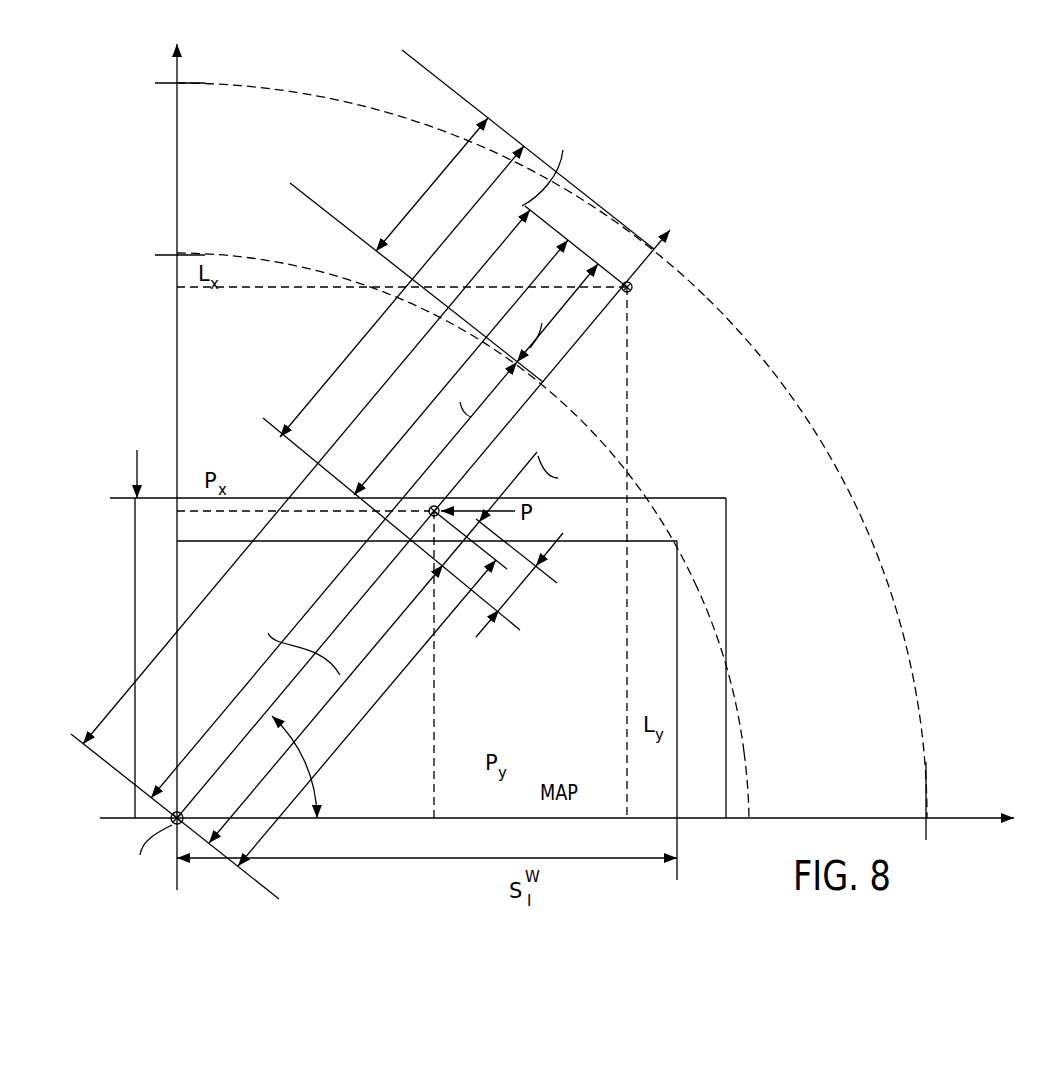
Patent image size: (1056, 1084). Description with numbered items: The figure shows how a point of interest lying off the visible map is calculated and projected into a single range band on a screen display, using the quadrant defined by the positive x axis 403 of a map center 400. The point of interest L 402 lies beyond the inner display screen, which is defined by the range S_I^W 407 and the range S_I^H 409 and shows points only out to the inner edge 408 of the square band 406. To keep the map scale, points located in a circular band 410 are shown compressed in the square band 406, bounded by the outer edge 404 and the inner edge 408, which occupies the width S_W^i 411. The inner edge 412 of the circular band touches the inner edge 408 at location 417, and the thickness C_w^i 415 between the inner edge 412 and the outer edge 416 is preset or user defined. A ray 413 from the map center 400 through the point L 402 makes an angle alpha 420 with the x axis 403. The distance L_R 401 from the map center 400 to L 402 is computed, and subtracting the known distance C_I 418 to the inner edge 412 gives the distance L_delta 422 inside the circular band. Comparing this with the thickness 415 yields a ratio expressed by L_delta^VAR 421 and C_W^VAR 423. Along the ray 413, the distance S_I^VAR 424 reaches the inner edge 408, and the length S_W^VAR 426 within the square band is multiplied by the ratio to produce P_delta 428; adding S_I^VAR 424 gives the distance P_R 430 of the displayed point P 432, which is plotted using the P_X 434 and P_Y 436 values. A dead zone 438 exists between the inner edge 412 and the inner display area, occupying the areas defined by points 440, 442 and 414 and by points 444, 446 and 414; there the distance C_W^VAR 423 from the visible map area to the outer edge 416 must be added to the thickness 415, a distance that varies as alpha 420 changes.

The map center 400 is at (180, 812).
The distance L_R 401 is at (387, 384).
The point of interest L 402 is at (640, 289).
The positive x axis 403 is at (981, 818).
The outer edge of the square band 404 is at (728, 540).
The square band 406 is at (700, 740).
The range S_I^W 407 is at (455, 858).
The inner edge of the square band 408 is at (677, 768).
The range S_I^H 409 is at (118, 658).
The circular band 410 is at (676, 398).
The width S_W^i 411 is at (118, 442).
The inner edge of the circular band 412 is at (750, 774).
The ray 413 is at (668, 241).
The dead zone corner point 414 is at (677, 543).
The thickness C_w^i 415 is at (396, 228).
The outer edge of the circular band 416 is at (888, 585).
The location 417 is at (308, 542).
The distance C_I 418 is at (489, 396).
The angle alpha 420 is at (355, 786).
The L_delta^VAR 421 is at (486, 269).
The distance L_delta 422 is at (566, 312).
The distance C_W^VAR 423 is at (300, 412).
The distance S_I^VAR 424 is at (368, 655).
The length S_W^VAR 426 is at (466, 646).
The value P_delta 428 is at (511, 485).
The distance P_R 430 is at (367, 713).
The point of interest P 432 is at (550, 533).
The P_X value 434 is at (260, 474).
The P_Y value 436 is at (485, 632).
The dead zone 438 is at (258, 305).
The dead zone point 440 is at (182, 255).
The dead zone point 442 is at (180, 545).
The dead zone point 444 is at (677, 840).
The dead zone point 446 is at (748, 804).